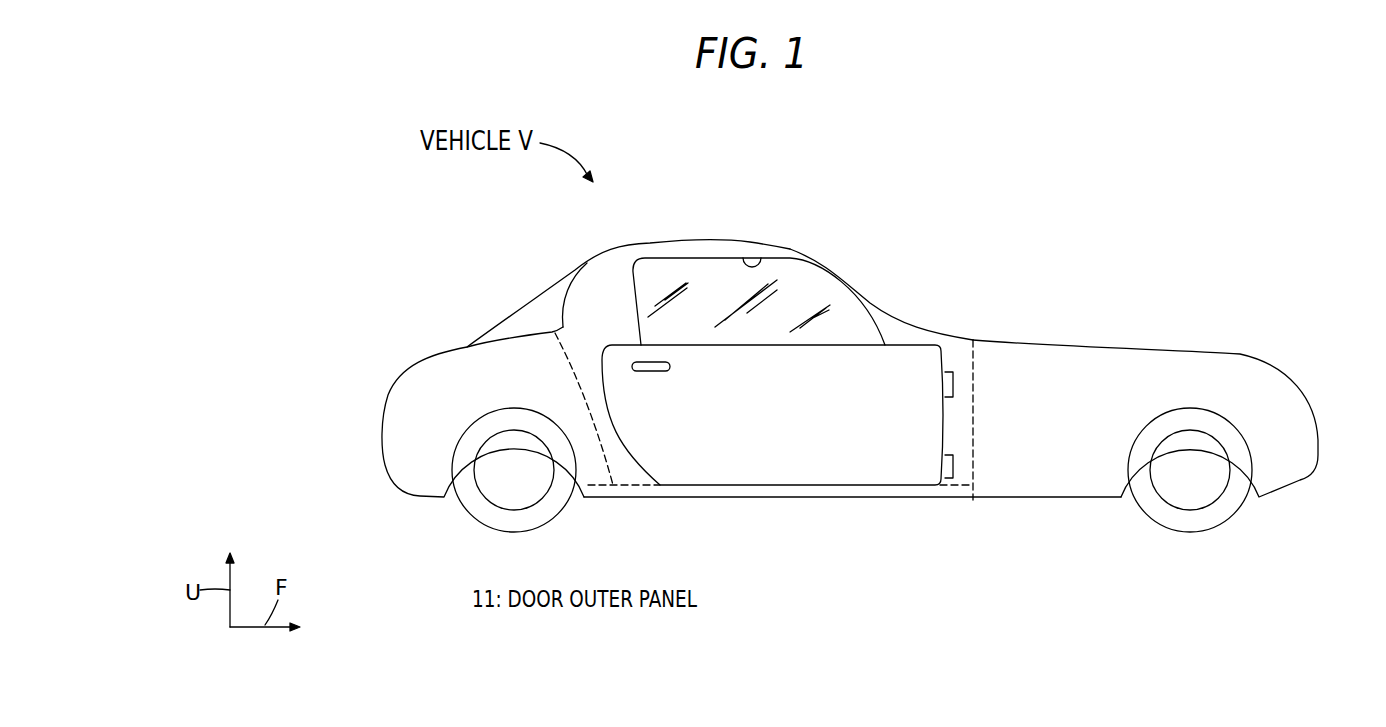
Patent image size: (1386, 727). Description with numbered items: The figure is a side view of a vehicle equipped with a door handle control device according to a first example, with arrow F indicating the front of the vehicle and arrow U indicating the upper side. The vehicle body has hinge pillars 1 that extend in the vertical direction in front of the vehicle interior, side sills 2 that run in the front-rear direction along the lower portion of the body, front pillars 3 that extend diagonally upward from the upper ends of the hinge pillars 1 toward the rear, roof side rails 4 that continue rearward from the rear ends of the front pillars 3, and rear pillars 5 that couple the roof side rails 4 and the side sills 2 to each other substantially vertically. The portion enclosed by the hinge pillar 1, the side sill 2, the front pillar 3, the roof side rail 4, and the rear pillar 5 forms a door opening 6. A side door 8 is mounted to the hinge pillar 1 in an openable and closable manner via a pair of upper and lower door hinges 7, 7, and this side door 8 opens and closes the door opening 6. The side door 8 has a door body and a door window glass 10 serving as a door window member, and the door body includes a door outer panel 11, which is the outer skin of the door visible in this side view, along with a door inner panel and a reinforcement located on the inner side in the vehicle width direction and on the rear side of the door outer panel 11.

The hinge pillar 1 is at (975, 420).
The side sill 2 is at (712, 497).
The front pillar 3 is at (882, 317).
The roof side rail 4 is at (668, 248).
The rear pillar 5 is at (563, 363).
The door opening 6 is at (760, 264).
The door hinge 7 is at (953, 382).
The side door 8 is at (815, 371).
The door window glass 10 is at (798, 295).
The door outer panel 11 is at (793, 412).